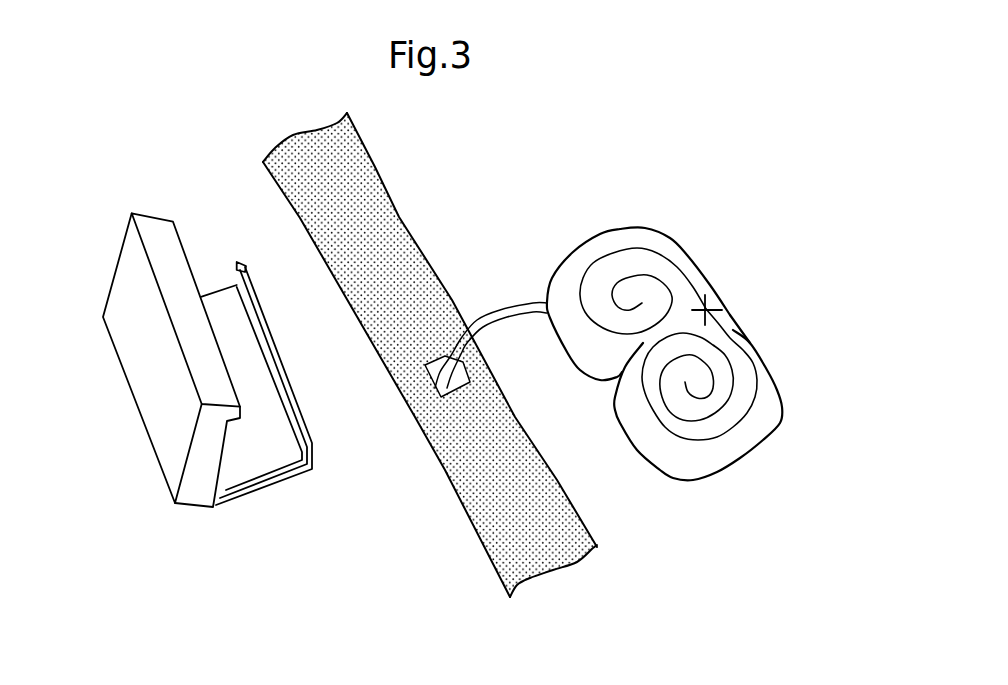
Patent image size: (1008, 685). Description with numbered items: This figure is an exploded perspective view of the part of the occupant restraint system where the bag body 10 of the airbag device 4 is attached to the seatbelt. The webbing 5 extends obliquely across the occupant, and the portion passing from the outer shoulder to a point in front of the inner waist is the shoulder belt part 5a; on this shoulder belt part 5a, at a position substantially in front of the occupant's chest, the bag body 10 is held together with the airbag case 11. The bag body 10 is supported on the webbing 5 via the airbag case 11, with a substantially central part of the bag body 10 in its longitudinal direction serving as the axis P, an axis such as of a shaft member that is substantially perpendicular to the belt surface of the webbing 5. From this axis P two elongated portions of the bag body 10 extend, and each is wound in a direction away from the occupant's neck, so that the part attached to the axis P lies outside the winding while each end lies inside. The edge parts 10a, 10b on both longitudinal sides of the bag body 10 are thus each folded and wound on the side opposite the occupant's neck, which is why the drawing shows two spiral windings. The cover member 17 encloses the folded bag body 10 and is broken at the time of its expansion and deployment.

The airbag device 4 is at (638, 339).
The webbing 5 is at (487, 520).
The shoulder belt part 5a is at (430, 378).
The bag body 10 is at (746, 367).
The edge part 10a is at (640, 305).
The edge part 10b is at (690, 396).
The airbag case 11 is at (163, 453).
The cover member 17 is at (743, 457).
The axis P is at (713, 307).